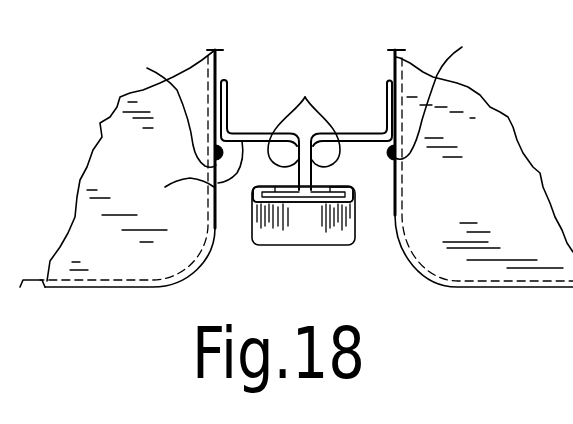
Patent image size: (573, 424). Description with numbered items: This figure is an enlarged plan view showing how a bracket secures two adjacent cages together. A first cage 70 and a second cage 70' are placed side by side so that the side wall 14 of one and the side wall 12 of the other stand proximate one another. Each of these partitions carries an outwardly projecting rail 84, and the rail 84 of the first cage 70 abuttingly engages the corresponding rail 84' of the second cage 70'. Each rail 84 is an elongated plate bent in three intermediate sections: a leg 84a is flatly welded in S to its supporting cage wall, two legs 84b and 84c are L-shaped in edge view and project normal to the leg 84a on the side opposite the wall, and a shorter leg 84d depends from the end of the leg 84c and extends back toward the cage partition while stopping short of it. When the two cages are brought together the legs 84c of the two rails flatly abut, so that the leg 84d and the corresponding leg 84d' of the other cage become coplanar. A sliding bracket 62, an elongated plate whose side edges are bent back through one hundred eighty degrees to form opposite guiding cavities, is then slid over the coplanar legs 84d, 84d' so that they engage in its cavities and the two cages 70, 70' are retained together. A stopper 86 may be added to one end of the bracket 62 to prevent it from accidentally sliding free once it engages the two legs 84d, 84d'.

The side wall 12 is at (392, 55).
The side wall 14 is at (218, 54).
The sliding bracket 62 is at (305, 203).
The cage 70 is at (117, 168).
The second cage 70' is at (484, 145).
The rail 84 is at (306, 123).
The leg 84a is at (222, 100).
The rail 84' is at (367, 92).
The leg 84b is at (191, 178).
The leg 84c is at (305, 97).
The leg 84d is at (274, 249).
The leg 84d' is at (354, 252).
The stopper 86 is at (340, 188).
The weld S is at (301, 95).